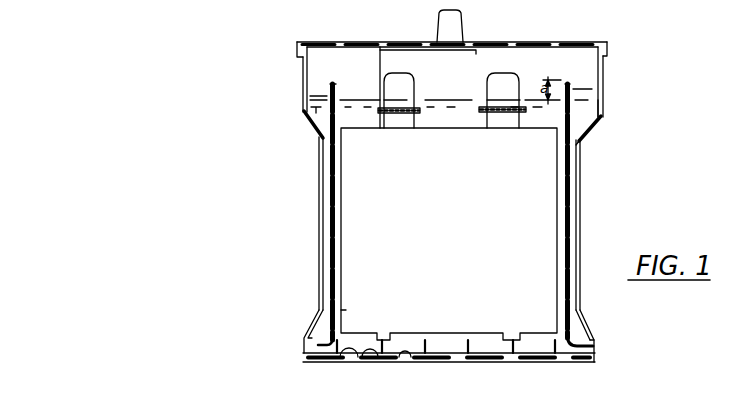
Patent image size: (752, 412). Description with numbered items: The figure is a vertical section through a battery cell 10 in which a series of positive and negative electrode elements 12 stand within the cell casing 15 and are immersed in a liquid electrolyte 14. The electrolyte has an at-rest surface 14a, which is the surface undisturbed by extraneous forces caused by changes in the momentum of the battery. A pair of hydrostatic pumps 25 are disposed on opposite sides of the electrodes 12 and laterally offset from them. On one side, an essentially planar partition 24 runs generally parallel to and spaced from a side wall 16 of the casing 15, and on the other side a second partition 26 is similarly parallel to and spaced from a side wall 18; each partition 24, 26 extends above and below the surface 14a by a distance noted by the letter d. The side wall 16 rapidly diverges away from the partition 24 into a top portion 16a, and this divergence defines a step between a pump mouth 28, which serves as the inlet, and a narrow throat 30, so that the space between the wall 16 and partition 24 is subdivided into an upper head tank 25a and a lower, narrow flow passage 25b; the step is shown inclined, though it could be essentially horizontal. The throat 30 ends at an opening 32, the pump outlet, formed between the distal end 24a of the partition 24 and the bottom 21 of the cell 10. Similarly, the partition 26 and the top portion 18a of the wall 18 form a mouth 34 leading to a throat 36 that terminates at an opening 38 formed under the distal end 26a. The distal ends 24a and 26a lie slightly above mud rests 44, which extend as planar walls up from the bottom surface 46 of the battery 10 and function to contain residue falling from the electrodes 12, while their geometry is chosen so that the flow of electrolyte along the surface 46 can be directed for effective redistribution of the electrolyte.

The battery cell 10 is at (613, 37).
The electrode elements 12 is at (438, 125).
The liquid electrolyte 14 is at (352, 97).
The at-rest surface of electrolyte 14a is at (530, 93).
The cell casing 15 is at (323, 178).
The side wall 16 is at (581, 158).
The top portion of side wall 16a is at (603, 67).
The side wall 18 is at (320, 233).
The top portion of side wall 18a is at (303, 74).
The bottom 21 is at (577, 364).
The partition 24 is at (573, 198).
The distal end of partition 24a is at (578, 345).
The hydrostatic pumps 25 is at (303, 110).
The upper head tank 25a is at (600, 99).
The lower narrow flow passage 25b is at (573, 226).
The second partition 26 is at (330, 193).
The distal end of second partition 26a is at (303, 345).
The pump mouth 28 is at (585, 83).
The throat 30 is at (577, 141).
The opening 32 is at (576, 333).
The mouth 34 is at (434, 94).
The throat 36 is at (312, 133).
The opening 38 is at (321, 333).
The mud rests 44 is at (361, 357).
The bottom surface 46 is at (412, 358).